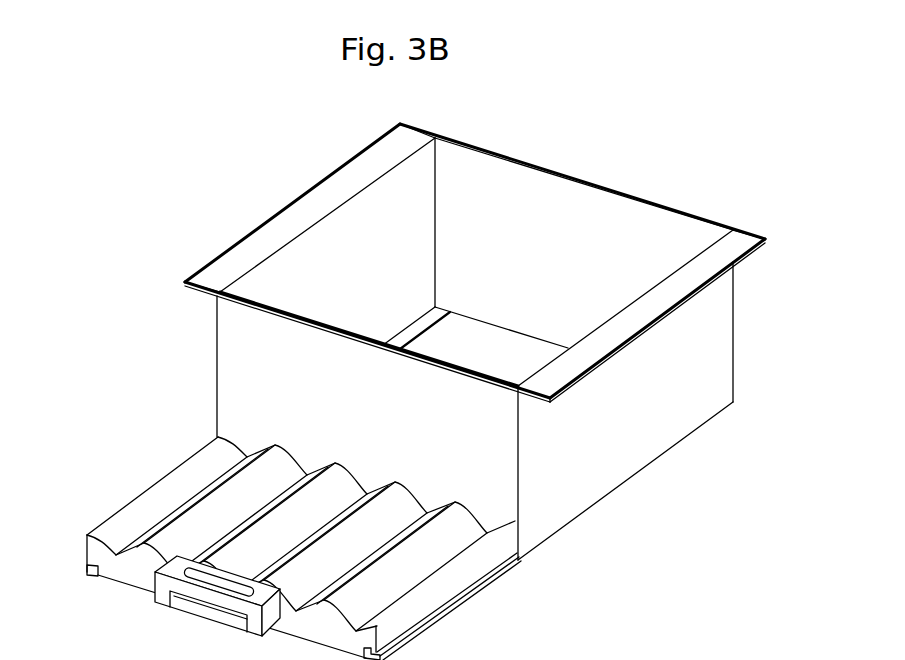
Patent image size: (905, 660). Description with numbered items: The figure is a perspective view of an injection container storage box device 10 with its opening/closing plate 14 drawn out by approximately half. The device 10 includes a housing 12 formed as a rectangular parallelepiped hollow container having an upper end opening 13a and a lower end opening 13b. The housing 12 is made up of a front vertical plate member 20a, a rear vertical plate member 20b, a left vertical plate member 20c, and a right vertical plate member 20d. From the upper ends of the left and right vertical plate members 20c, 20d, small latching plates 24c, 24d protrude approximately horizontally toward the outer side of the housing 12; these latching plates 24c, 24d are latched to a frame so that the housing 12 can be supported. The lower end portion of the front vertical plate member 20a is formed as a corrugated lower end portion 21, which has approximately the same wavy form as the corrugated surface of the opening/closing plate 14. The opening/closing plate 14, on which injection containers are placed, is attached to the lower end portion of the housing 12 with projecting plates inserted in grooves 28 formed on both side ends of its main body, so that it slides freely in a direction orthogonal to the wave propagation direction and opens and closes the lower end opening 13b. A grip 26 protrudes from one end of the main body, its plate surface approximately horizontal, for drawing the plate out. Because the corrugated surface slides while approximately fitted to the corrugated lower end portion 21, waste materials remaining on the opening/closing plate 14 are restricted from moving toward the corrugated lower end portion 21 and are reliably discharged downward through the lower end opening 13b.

The injection container storage box device 10 is at (258, 143).
The housing 12 is at (640, 197).
The upper end opening 13a is at (656, 234).
The lower end opening 13b is at (488, 337).
The opening/closing plate 14 is at (132, 481).
The front vertical plate member 20a is at (250, 393).
The rear vertical plate member 20b is at (598, 243).
The left vertical plate member 20c is at (393, 212).
The right vertical plate member 20d is at (707, 347).
The corrugated lower end portion 21 is at (435, 491).
The latching plate 24c is at (267, 228).
The latching plate 24d is at (740, 236).
The grip 26 is at (212, 598).
The grooves 28 is at (85, 568).